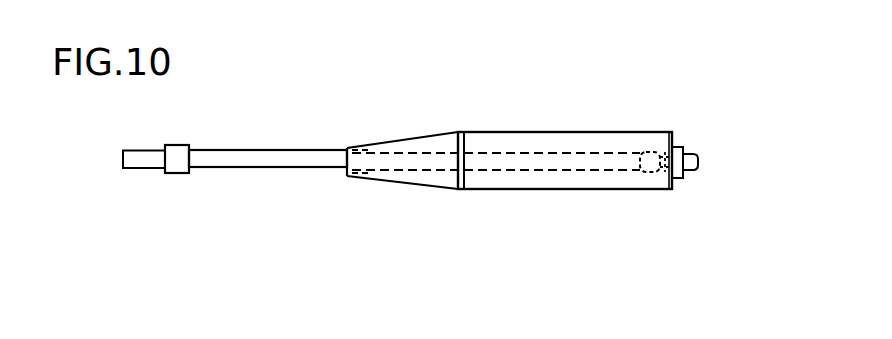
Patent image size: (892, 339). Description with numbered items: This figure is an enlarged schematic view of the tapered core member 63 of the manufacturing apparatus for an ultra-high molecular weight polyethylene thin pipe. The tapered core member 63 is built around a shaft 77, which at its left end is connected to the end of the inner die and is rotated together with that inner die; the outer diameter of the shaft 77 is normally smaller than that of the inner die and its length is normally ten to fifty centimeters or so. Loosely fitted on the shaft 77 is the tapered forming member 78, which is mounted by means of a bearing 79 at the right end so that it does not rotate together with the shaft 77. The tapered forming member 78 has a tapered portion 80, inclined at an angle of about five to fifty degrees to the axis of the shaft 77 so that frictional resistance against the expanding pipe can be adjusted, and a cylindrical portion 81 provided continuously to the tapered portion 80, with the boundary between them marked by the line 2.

The shaft 77 is at (272, 155).
The tapered portion 80 is at (430, 143).
The joint line 2 is at (459, 133).
The tapered forming member 78 is at (553, 132).
The bearing 79 is at (660, 150).
The cylindrical portion 81 is at (582, 190).
The tapered core member 63 is at (523, 162).